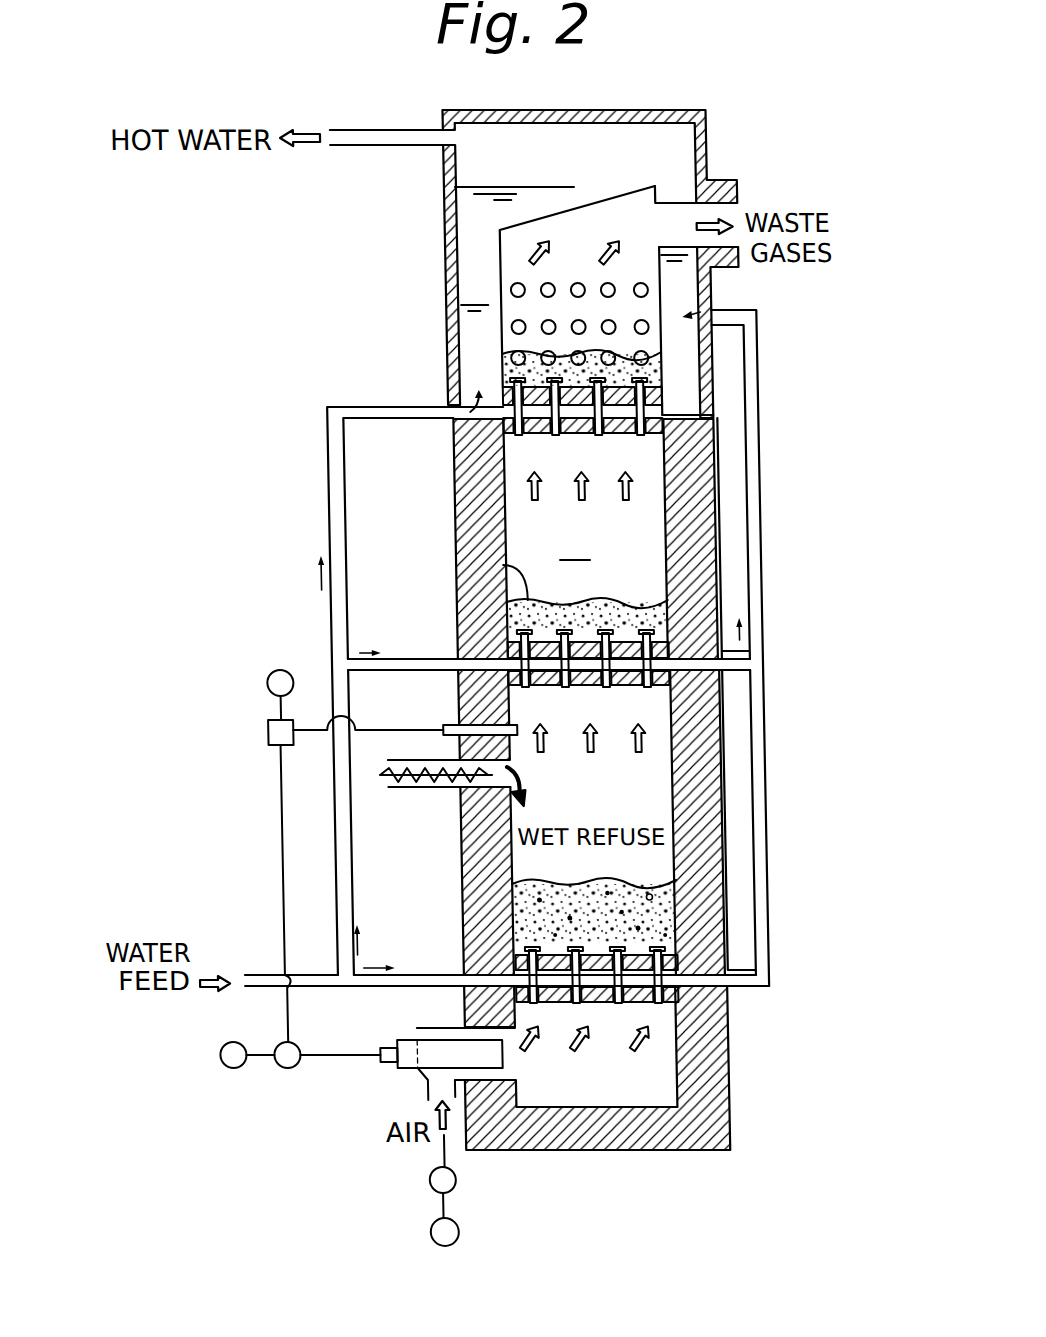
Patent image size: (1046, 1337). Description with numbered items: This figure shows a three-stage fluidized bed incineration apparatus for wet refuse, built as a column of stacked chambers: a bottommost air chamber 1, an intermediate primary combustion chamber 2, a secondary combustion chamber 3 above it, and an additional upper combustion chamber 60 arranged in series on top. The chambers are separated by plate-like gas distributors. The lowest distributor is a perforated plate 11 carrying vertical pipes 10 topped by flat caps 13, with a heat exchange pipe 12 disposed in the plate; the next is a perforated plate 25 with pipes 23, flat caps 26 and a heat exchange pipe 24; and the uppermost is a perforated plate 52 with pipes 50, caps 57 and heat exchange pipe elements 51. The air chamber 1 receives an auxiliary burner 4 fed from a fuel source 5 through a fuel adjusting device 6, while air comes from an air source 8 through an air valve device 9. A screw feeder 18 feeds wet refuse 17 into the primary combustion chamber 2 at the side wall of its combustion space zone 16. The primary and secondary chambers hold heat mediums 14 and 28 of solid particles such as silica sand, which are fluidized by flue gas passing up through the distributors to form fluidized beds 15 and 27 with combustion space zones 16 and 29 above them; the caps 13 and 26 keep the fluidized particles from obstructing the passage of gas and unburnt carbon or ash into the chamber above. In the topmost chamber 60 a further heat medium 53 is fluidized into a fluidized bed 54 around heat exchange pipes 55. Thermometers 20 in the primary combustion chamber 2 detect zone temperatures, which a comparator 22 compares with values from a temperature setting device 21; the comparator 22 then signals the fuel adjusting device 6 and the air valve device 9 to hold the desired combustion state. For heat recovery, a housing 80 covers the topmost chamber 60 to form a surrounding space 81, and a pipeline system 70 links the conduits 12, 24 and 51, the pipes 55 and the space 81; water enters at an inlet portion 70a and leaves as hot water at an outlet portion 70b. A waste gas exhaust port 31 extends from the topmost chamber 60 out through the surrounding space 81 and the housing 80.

The air chamber 1 is at (667, 1070).
The primary combustion chamber 2 is at (637, 805).
The secondary combustion chamber 3 is at (652, 527).
The auxiliary burner 4 is at (393, 1040).
The fuel source 5 is at (220, 1068).
The fuel adjusting device 6 is at (274, 1068).
The air source 8 is at (415, 1232).
The air valve device 9 is at (415, 1180).
The pipes 10 is at (585, 1055).
The perforated plate 11 is at (604, 1005).
The heat exchange pipe 12 is at (689, 983).
The flat caps 13 is at (502, 940).
The heat medium of solid particles 14 is at (660, 913).
The fluidized bed 15 is at (603, 882).
The combustion space zone 16 is at (608, 882).
The wet refuse 17 is at (641, 895).
The screw feeder 18 is at (393, 788).
The thermometers 20 is at (444, 725).
The temperature setting device 21 is at (262, 683).
The comparator 22 is at (256, 730).
The pipes 23 is at (643, 687).
The heat exchange pipe 24 is at (697, 668).
The perforated plate 25 is at (585, 687).
The flat caps 26 is at (506, 610).
The fluidized bed 27 is at (500, 565).
The heat medium of solid particles 28 is at (668, 612).
The combustion space zone 29 is at (656, 469).
The waste gas exhaust port 31 is at (743, 172).
The pipes 50 is at (644, 432).
The heat exchange pipe elements 51 is at (658, 410).
The perforated plate 52 is at (547, 432).
The heat medium of solid particles 53 is at (506, 362).
The fluidized bed 54 is at (538, 348).
The heat exchange pipes 55 is at (527, 285).
The caps 57 is at (661, 358).
The additional upper combustion chamber 60 is at (702, 292).
The pipeline system 70 is at (326, 478).
The inlet portion 70a is at (254, 975).
The outlet portion 70b is at (374, 130).
The housing 80 is at (790, 118).
The surrounding space 81 is at (479, 205).